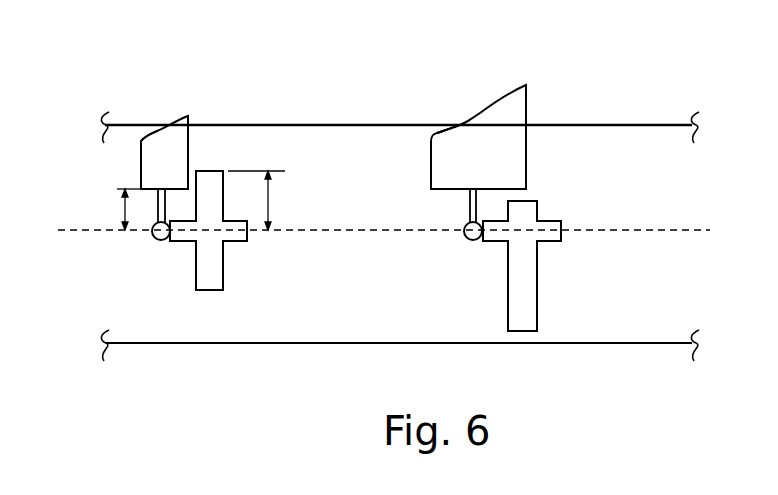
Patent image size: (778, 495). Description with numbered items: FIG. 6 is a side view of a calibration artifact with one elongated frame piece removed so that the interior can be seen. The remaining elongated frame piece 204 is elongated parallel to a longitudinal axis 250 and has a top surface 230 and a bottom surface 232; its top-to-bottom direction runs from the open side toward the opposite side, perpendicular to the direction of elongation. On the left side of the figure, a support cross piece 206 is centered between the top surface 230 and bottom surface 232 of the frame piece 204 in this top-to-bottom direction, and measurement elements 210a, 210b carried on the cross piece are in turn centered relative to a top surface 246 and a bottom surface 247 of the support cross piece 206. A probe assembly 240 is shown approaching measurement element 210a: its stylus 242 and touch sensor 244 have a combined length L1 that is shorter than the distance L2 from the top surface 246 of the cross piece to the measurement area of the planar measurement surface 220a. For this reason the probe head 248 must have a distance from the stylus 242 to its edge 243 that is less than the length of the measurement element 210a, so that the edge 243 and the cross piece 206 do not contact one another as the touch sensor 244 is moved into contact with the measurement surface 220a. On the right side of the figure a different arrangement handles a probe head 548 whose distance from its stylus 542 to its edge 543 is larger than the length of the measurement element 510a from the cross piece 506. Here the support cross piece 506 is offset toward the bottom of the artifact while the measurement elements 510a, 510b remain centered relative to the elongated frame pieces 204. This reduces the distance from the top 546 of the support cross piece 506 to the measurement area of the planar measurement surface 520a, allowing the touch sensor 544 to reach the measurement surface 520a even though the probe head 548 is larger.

The elongated frame piece 204 is at (645, 328).
The support cross piece 206 is at (213, 185).
The measurement element 210a is at (187, 243).
The measurement element 210b is at (243, 242).
The planar measurement surface 220a is at (170, 243).
The top surface 230 is at (325, 125).
The bottom surface 232 is at (307, 345).
The probe assembly 240 is at (127, 172).
The stylus 242 is at (168, 207).
The edge 243 is at (190, 142).
The touch sensor 244 is at (154, 236).
The top surface 246 is at (204, 170).
The bottom surface 247 is at (213, 292).
The probe head 248 is at (141, 142).
The longitudinal axis 250 is at (680, 229).
The support cross piece 506 is at (528, 213).
The measurement element 510a is at (496, 243).
The measurement element 510b is at (552, 243).
The planar measurement surface 520a is at (479, 240).
The stylus 542 is at (469, 208).
The edge 543 is at (527, 155).
The touch sensor 544 is at (466, 226).
The top 546 is at (528, 198).
The probe head 548 is at (438, 156).